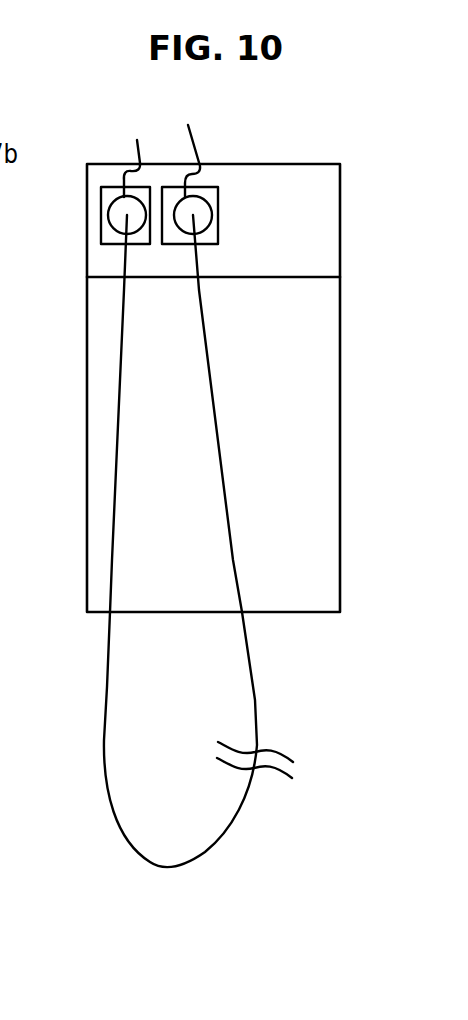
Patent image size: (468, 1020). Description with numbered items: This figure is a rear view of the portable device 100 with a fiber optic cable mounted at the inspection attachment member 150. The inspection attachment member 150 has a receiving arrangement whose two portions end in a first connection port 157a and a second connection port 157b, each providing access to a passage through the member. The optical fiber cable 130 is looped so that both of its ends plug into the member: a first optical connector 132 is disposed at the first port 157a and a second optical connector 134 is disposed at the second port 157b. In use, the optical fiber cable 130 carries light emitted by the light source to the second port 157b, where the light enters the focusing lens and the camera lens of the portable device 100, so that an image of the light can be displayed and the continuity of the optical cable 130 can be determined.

The portable device 100 is at (217, 481).
The optical fiber cable 130 is at (107, 687).
The first optical connector 132 is at (196, 146).
The second optical connector 134 is at (126, 155).
The inspection attachment member 150 is at (348, 203).
The first connection port 157a is at (218, 225).
The second connection port 157b is at (101, 205).